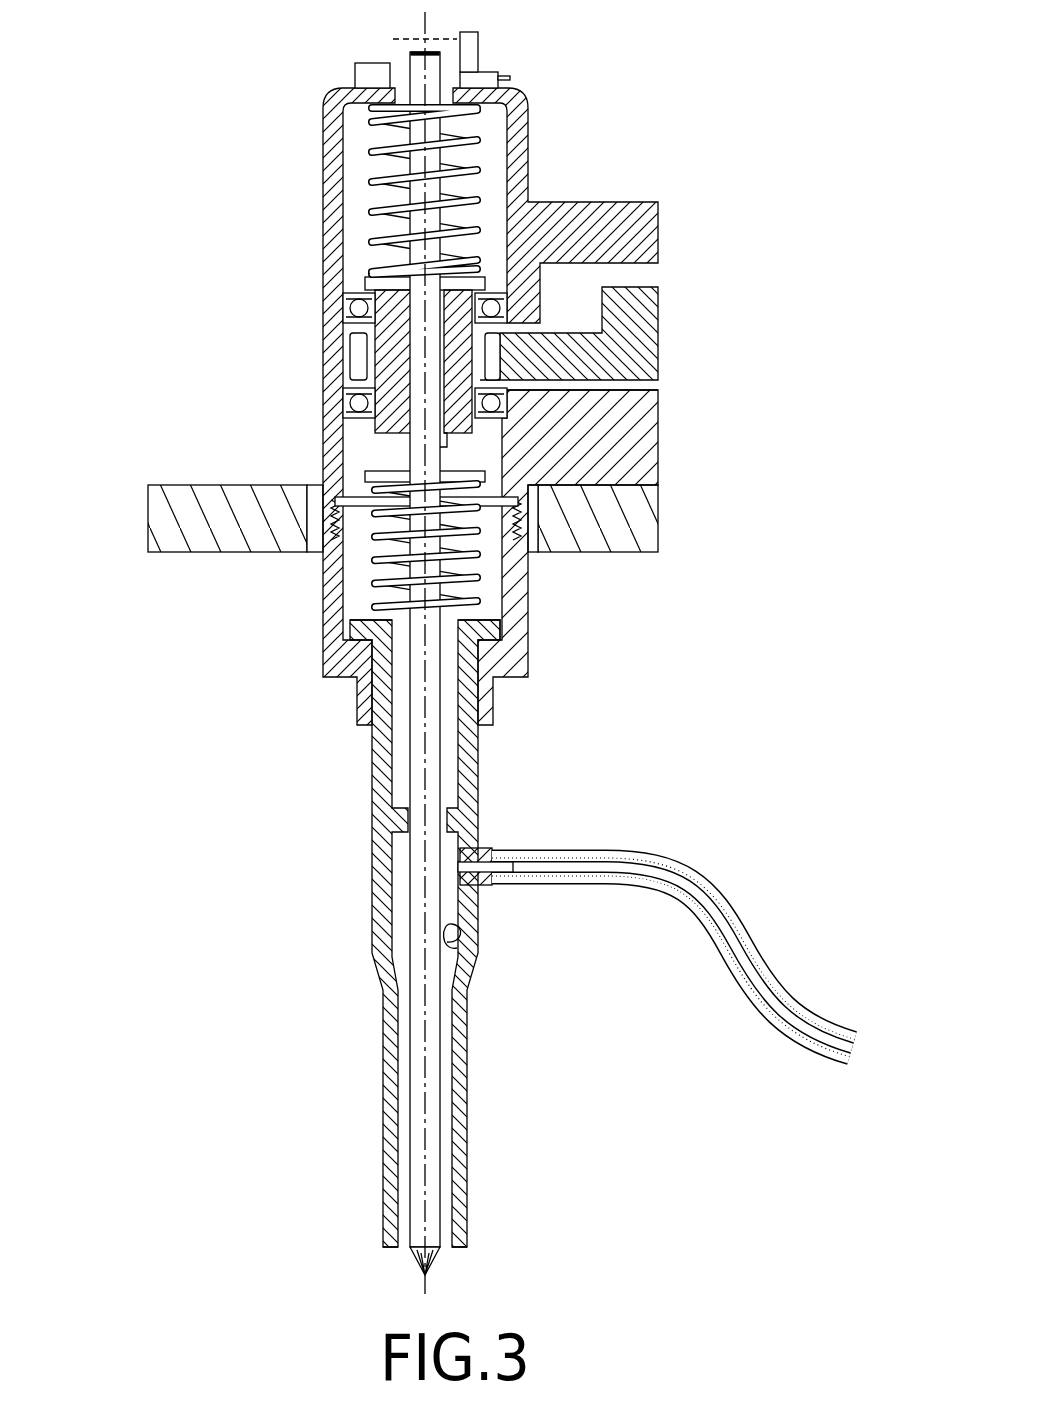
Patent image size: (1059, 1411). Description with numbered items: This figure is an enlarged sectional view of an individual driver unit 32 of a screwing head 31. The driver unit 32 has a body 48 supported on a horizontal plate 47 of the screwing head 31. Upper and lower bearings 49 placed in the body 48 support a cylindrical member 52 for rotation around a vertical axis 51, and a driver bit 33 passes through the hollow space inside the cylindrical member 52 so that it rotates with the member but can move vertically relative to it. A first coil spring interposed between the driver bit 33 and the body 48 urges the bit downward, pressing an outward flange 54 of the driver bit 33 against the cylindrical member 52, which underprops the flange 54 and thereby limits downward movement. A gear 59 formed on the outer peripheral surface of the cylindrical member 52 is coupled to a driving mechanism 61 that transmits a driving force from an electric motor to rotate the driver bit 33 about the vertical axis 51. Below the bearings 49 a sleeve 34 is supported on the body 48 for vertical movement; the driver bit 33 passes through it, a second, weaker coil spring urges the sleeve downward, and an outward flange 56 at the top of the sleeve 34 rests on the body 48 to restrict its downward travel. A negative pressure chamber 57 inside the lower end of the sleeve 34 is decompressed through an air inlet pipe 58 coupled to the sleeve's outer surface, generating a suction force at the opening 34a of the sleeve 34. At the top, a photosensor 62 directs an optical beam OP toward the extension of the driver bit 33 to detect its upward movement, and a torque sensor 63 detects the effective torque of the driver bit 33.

The screwing head 31 is at (148, 474).
The driver unit 32 is at (370, 880).
The driver bit 33 is at (442, 1207).
The sleeve 34 is at (467, 1085).
The opening 34a is at (462, 1246).
The horizontal plate 47 is at (240, 486).
The body 48 is at (322, 617).
The bearings 49 is at (345, 307).
The vertical axis 51 is at (428, 22).
The cylindrical member 52 is at (370, 292).
The outward flange 54 is at (372, 280).
The outward flange 56 is at (500, 627).
The negative pressure chamber 57 is at (457, 948).
The air inlet pipe 58 is at (604, 851).
The gear 59 is at (352, 357).
The driving mechanism 61 is at (630, 286).
The photosensor 62 is at (478, 57).
The torque sensor 63 is at (355, 72).
The optical beam OP is at (408, 38).